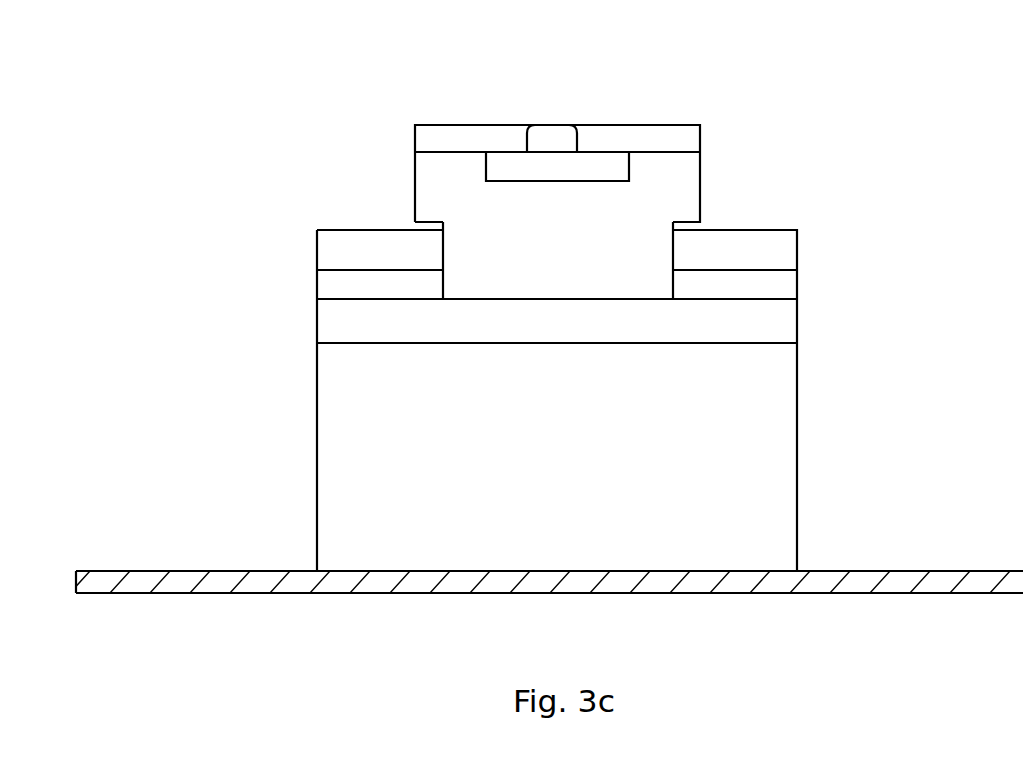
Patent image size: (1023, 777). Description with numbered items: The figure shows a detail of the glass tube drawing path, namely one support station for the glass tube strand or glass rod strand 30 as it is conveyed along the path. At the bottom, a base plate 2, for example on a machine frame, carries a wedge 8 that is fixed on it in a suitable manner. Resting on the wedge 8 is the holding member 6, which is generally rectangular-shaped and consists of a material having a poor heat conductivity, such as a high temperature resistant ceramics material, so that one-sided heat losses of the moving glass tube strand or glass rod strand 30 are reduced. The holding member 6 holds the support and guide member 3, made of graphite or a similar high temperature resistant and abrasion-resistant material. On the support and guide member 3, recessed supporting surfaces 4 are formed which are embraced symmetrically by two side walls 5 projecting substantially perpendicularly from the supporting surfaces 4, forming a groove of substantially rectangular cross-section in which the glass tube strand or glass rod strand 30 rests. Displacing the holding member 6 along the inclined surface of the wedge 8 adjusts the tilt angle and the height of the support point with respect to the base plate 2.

The base plate 2 is at (965, 571).
The support and guide member 3 is at (623, 254).
The supporting surface 4 is at (498, 147).
The side wall 5 is at (676, 176).
The holding member 6 is at (767, 322).
The wedge 8 is at (772, 406).
The glass tube strand or glass rod strand 30 is at (557, 132).